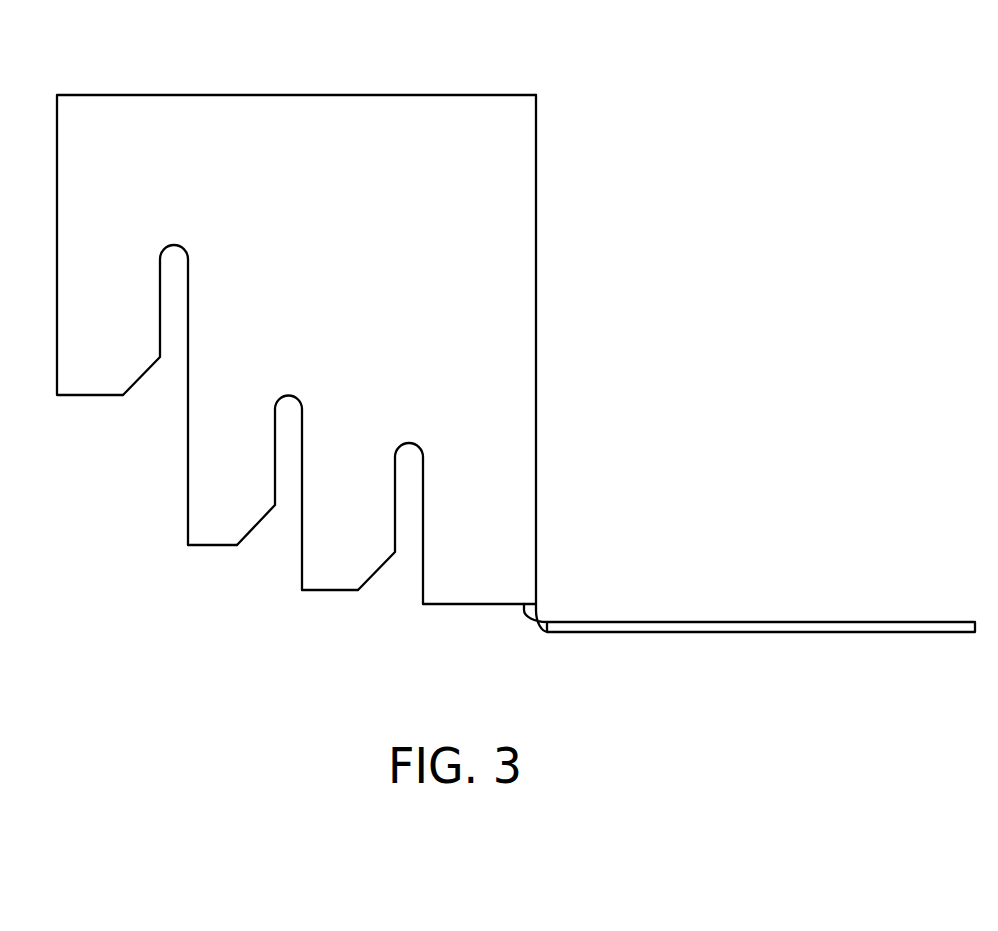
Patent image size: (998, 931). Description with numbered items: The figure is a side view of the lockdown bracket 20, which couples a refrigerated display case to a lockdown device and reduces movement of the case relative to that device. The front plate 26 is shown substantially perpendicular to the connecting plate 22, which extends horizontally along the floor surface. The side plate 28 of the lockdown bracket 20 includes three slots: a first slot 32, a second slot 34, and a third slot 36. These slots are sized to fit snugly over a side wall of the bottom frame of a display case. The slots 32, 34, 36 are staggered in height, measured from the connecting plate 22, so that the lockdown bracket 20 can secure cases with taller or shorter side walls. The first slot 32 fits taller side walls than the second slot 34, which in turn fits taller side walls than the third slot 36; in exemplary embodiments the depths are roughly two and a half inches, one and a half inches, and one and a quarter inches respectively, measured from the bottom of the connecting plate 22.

The lockdown bracket 20 is at (516, 341).
The connecting plate 22 is at (716, 627).
The front plate 26 is at (536, 324).
The side plate 28 is at (360, 114).
The first slot 32 is at (174, 347).
The second slot 34 is at (290, 497).
The third slot 36 is at (410, 545).